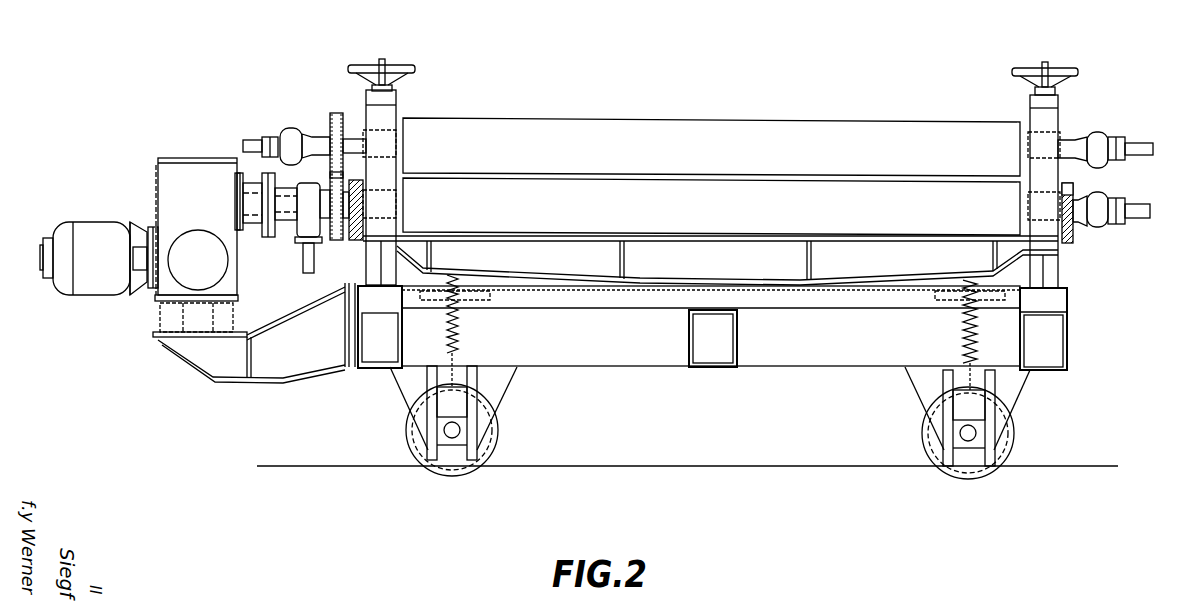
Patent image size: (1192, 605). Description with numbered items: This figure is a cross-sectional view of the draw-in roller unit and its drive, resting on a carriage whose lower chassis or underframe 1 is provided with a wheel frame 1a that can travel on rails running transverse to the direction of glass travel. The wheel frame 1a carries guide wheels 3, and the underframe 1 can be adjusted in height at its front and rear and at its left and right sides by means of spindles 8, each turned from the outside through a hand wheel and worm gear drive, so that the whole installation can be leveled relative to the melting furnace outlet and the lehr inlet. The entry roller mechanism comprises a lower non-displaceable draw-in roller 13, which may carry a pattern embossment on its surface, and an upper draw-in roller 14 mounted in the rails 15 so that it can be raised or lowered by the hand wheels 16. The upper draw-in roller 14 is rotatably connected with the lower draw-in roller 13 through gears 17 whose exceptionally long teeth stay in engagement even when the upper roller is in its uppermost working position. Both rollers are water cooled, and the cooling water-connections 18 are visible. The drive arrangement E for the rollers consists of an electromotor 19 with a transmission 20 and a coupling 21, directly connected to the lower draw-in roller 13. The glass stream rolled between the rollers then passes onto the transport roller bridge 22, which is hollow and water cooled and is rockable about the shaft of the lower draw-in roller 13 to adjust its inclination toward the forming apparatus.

The underframe 1 is at (643, 355).
The wheel frame 1a is at (493, 388).
The guide wheels 3 is at (495, 430).
The spindles 8 is at (460, 333).
The lower draw-in roller 13 is at (678, 190).
The upper draw-in roller 14 is at (750, 135).
The rails 15 is at (400, 115).
The hand wheels 16 is at (410, 77).
The gears 17 is at (337, 114).
The cooling water-connections 18 is at (255, 140).
The electromotor 19 is at (108, 228).
The transmission 20 is at (203, 170).
The coupling 21 is at (266, 238).
The transport roller bridge 22 is at (356, 243).
The drive arrangement E is at (152, 182).